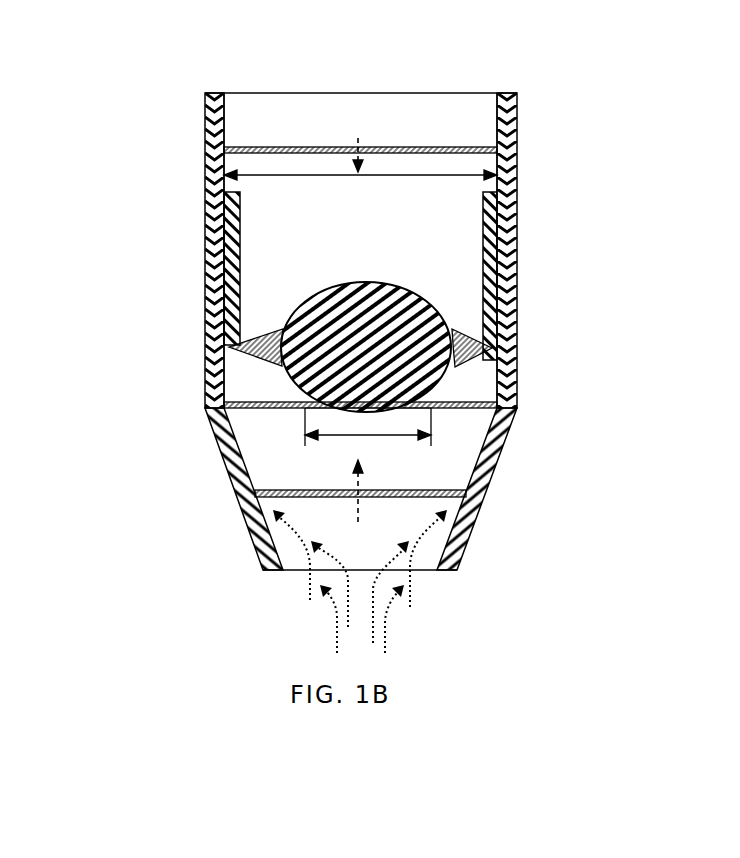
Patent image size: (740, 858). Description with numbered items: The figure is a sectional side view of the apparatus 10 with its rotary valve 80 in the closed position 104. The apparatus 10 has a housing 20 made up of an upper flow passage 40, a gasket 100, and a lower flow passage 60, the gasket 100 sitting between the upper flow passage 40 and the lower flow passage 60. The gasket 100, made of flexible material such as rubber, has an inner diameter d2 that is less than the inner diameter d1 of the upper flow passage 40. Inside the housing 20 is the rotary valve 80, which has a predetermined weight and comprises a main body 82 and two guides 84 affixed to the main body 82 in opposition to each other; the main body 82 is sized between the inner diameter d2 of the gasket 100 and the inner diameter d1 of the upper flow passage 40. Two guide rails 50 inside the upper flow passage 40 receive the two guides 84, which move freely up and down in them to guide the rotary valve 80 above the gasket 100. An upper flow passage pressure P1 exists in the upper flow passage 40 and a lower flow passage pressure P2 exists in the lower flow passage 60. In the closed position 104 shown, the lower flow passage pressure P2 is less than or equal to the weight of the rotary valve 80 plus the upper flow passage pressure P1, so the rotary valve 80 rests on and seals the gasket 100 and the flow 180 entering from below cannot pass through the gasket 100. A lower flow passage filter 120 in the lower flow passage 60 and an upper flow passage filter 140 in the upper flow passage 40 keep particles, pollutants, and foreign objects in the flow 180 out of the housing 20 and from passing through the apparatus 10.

The apparatus 10 is at (353, 70).
The housing 20 is at (150, 357).
The upper flow passage 40 is at (207, 118).
The guide rails 50 is at (240, 234).
The lower flow passage 60 is at (250, 520).
The rotary valve 80 is at (398, 260).
The main body 82 is at (408, 292).
The guides 84 is at (272, 325).
The gasket 100 is at (468, 403).
The closed position 104 is at (307, 398).
The lower flow passage filter 120 is at (447, 490).
The upper flow passage filter 140 is at (472, 146).
The flow 180 is at (310, 573).
The inner diameter of upper flow passage d1 is at (413, 177).
The inner diameter of gasket d2 is at (400, 462).
The upper flow passage pressure P1 is at (358, 142).
The lower flow passage pressure P2 is at (358, 512).